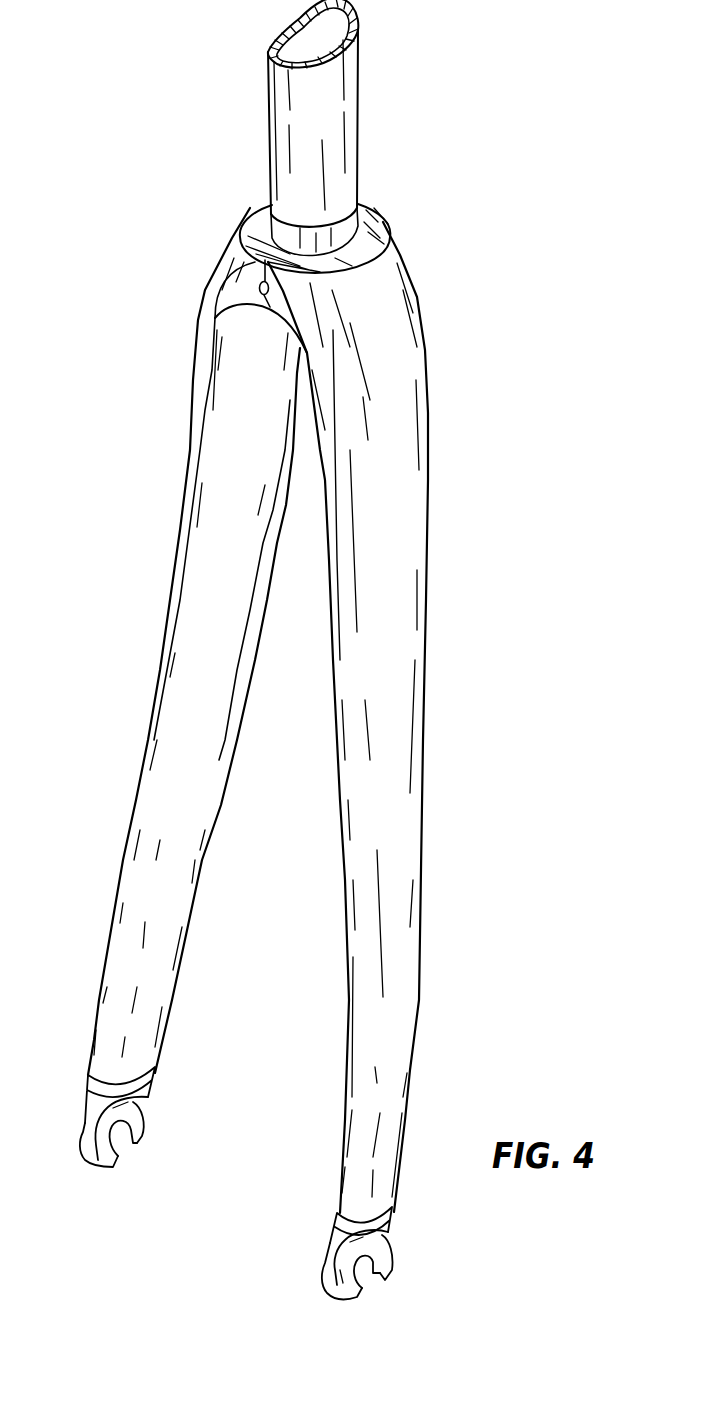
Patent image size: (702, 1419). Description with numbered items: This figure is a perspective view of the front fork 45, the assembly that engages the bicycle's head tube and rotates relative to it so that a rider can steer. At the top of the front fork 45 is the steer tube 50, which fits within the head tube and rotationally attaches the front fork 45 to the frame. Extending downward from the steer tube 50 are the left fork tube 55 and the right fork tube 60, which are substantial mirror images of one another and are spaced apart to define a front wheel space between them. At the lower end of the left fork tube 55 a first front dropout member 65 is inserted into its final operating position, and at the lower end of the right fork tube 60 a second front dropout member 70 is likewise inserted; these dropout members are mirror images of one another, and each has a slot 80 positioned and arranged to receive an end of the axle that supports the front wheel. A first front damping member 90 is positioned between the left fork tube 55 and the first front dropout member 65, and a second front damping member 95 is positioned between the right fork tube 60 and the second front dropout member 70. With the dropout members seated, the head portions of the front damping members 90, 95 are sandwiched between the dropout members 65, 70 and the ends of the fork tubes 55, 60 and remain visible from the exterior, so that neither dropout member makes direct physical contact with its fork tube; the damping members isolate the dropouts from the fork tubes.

The front fork 45 is at (500, 198).
The steer tube 50 is at (335, 101).
The left fork tube 55 is at (393, 608).
The right fork tube 60 is at (200, 583).
The first front dropout member 65 is at (383, 1247).
The second front dropout member 70 is at (143, 1117).
The slot 80 is at (127, 1140).
The first front damping member 90 is at (340, 1203).
The second front damping member 95 is at (103, 1082).